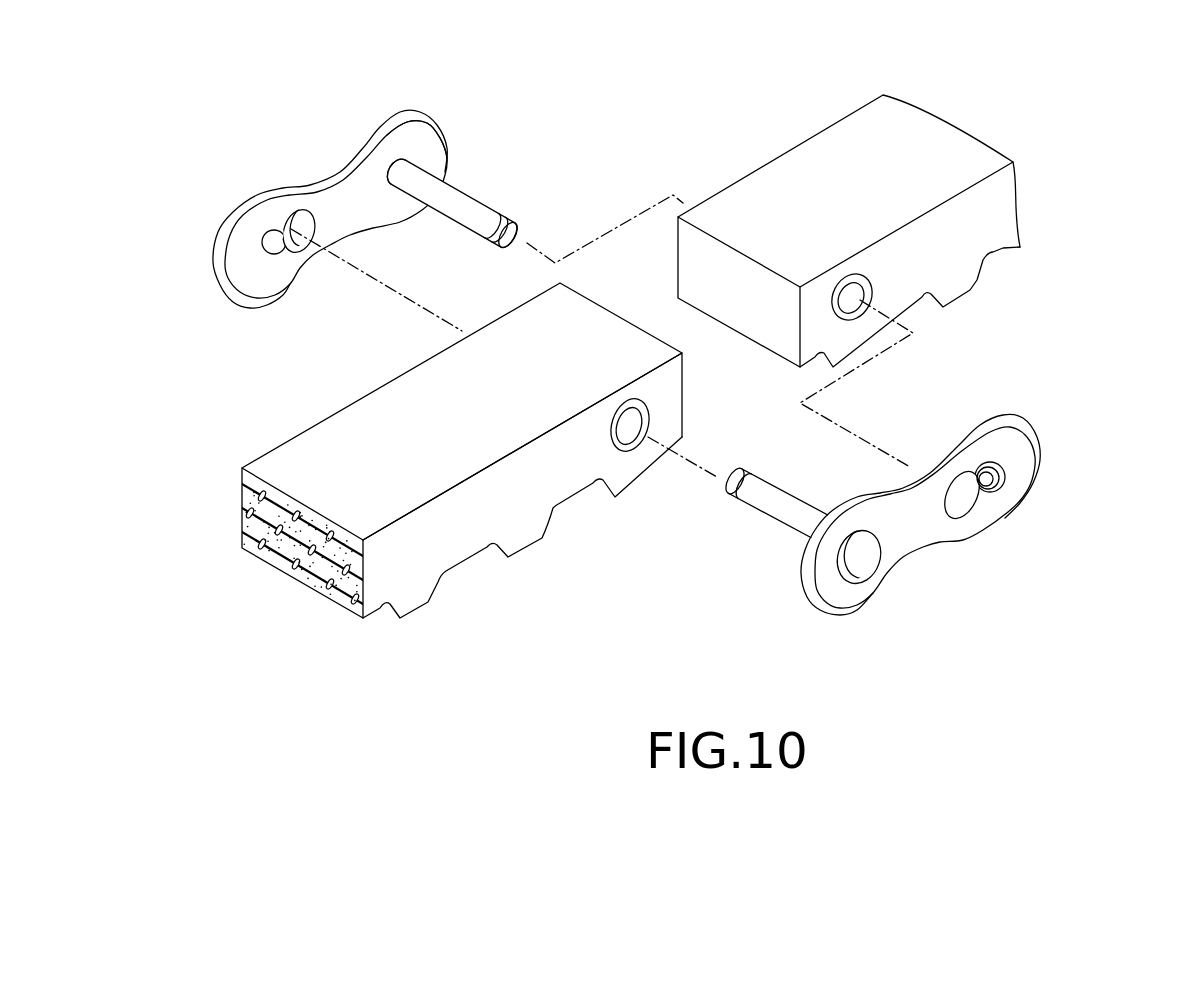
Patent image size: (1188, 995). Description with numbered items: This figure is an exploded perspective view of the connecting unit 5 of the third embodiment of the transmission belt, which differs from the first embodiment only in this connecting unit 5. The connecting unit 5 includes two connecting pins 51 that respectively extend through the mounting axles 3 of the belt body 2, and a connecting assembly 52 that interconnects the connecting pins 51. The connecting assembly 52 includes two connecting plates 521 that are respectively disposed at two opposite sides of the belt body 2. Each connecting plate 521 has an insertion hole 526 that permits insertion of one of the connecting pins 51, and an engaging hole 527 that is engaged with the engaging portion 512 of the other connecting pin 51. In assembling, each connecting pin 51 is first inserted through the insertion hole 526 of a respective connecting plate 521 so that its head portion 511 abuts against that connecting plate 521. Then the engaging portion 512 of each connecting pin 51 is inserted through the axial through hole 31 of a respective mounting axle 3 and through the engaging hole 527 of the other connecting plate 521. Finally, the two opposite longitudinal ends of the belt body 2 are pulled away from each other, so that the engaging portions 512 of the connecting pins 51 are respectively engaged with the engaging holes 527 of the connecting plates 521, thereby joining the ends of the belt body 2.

The belt body 2 is at (763, 145).
The mounting axle 3 is at (625, 443).
The axial through hole 31 is at (632, 420).
The connecting unit 5 is at (288, 143).
The connecting pin 51 is at (448, 195).
The head portion 511 is at (860, 567).
The engaging portion 512 is at (517, 232).
The connecting assembly 52 is at (1052, 478).
The connecting plate 521 is at (360, 190).
The insertion hole 526 is at (400, 177).
The engaging hole 527 is at (293, 250).